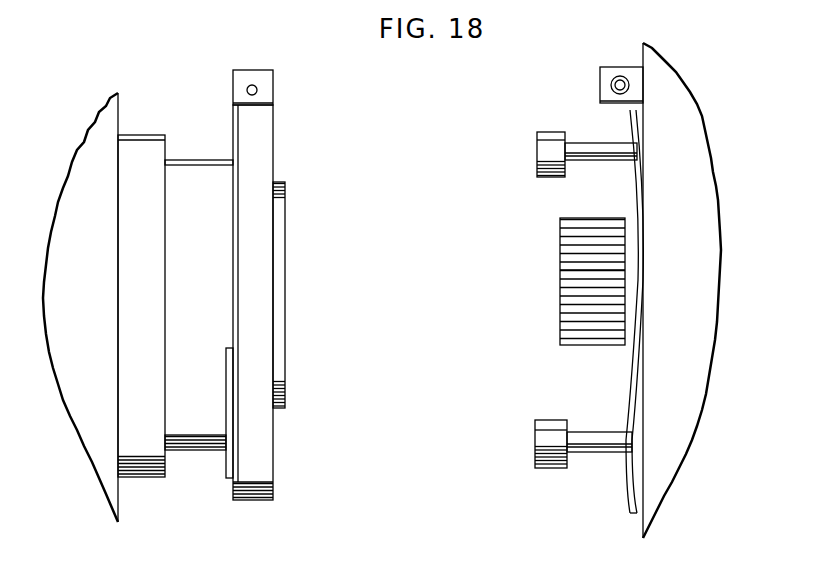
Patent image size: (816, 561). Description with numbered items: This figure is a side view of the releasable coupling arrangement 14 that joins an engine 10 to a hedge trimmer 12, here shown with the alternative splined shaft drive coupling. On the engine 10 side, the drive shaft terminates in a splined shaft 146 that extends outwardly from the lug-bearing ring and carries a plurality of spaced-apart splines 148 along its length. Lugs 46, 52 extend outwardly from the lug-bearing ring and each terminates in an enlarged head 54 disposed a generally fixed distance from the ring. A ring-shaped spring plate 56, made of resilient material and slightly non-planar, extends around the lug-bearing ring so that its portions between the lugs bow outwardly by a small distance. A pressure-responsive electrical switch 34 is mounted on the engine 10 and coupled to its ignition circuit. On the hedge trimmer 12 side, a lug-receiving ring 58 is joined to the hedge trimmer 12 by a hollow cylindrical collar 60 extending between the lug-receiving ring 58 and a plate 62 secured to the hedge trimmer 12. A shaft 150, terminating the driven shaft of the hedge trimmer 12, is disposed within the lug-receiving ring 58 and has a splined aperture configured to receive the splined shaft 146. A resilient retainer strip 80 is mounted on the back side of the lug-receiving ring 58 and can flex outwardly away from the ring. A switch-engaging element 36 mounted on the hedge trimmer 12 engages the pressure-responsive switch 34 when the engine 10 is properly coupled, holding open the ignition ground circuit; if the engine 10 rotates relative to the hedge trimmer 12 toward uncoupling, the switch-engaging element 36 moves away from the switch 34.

The engine 10 is at (696, 112).
The hedge trimmer 12 is at (120, 114).
The releasable coupling arrangement 14 is at (487, 489).
The pressure-responsive electrical switch 34 is at (606, 88).
The switch-engaging element 36 is at (266, 92).
The lug 46 is at (584, 446).
The lug 52 is at (578, 152).
The enlarged head 54 is at (540, 148).
The spring plate 56 is at (630, 496).
The lug-receiving ring 58 is at (262, 136).
The hollow cylindrical collar 60 is at (195, 428).
The plate 62 is at (140, 452).
The resilient retainer strip 80 is at (228, 476).
The splined shaft 146 is at (562, 290).
The splines 148 is at (562, 262).
The shaft 150 is at (278, 270).